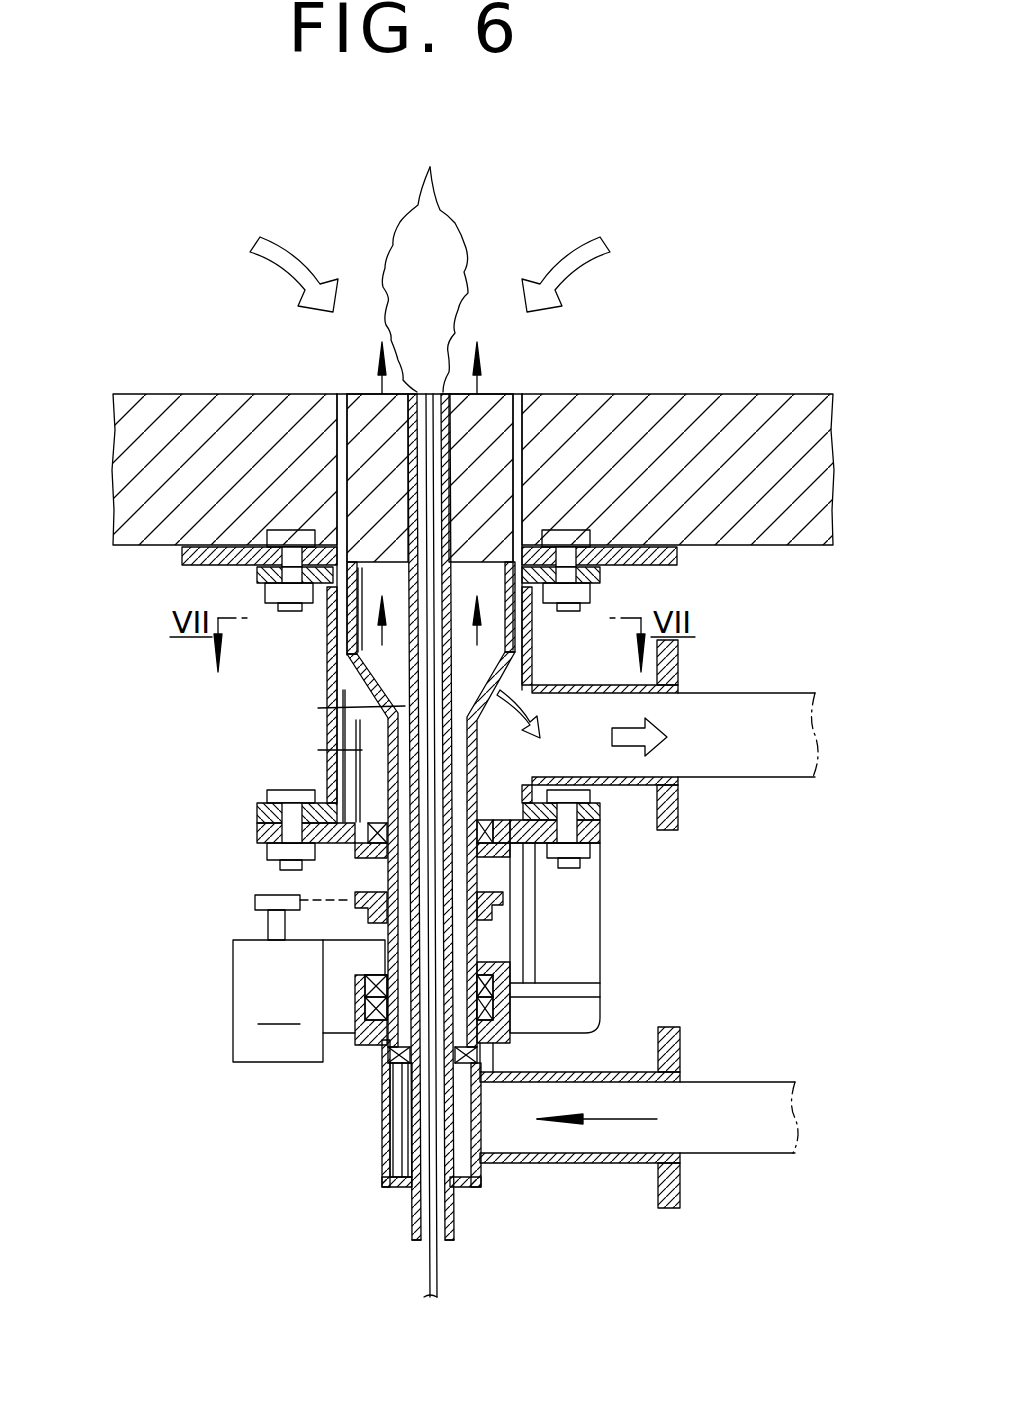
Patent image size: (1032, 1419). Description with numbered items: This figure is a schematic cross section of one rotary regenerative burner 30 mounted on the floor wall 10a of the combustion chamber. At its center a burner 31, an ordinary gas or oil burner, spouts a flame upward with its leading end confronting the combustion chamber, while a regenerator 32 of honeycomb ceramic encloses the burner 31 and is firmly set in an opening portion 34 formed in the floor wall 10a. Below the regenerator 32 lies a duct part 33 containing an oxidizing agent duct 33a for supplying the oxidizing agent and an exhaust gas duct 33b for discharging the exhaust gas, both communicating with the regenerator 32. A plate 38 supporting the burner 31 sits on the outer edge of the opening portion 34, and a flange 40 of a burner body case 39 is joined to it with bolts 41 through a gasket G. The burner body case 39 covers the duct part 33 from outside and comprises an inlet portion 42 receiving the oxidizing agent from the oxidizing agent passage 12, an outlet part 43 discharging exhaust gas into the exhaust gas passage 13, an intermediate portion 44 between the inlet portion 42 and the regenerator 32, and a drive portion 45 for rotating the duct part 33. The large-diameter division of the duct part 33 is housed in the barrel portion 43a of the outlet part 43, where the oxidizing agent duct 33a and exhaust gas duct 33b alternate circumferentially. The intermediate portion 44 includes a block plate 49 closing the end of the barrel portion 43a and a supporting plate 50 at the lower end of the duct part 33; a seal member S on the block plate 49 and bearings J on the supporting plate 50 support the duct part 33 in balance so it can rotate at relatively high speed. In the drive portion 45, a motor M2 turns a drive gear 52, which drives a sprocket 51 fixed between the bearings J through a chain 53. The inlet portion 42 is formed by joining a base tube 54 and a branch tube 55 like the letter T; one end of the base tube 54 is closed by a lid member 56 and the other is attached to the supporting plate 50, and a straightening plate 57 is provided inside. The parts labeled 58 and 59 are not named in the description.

The floor wall 10a is at (755, 553).
The oxidizing agent passage 12 is at (740, 1142).
The exhaust gas passage 13 is at (790, 770).
The rotary regenerative burner 30 is at (142, 303).
The burner 31 is at (428, 392).
The regenerator 32 is at (362, 425).
The duct part 33 is at (265, 693).
The oxidizing agent duct 33a is at (336, 711).
The exhaust gas duct 33b is at (314, 751).
The opening portion 34 is at (345, 507).
The plate 38 is at (182, 548).
The burner body case 39 is at (765, 810).
The flange 40 is at (578, 610).
The bolts 41 is at (599, 605).
The inlet portion 42 is at (688, 1072).
The outlet part 43 is at (688, 785).
The barrel portion 43a is at (566, 666).
The intermediate portion 44 is at (612, 922).
The drive portion 45 is at (242, 1001).
The block plate 49 is at (593, 833).
The supporting plate 50 is at (500, 1040).
The sprocket 51 is at (368, 915).
The drive gear 52 is at (255, 903).
The chain 53 is at (343, 892).
The base tube 54 is at (382, 1163).
The branch tube 55 is at (568, 1178).
The lid member 56 is at (478, 1180).
The straightening plate 57 is at (385, 1062).
The tube end 58 is at (455, 1230).
The center rod 59 is at (438, 1290).
The seal member S is at (442, 133).
The gasket G is at (250, 572).
The bearing J is at (378, 855).
The motor M2 is at (279, 1007).